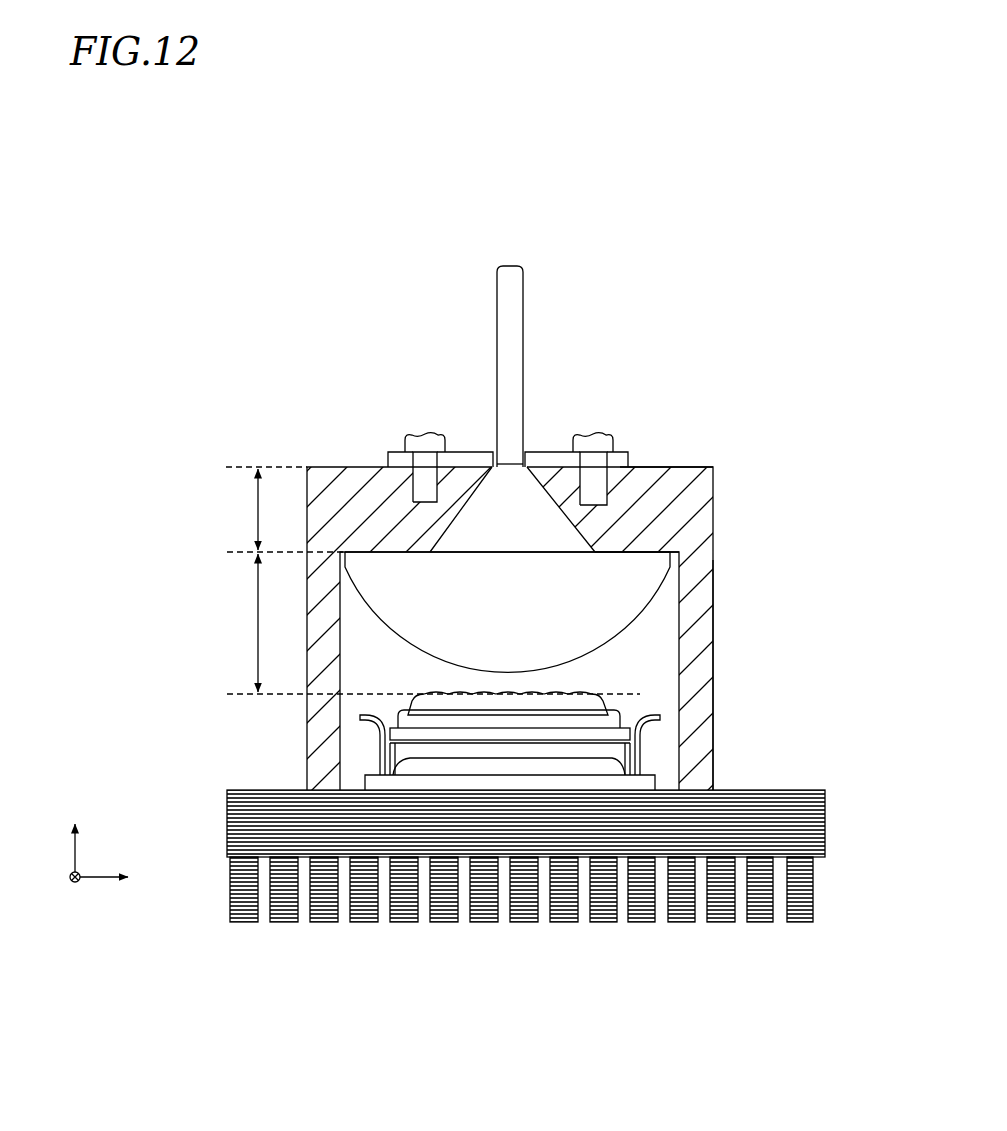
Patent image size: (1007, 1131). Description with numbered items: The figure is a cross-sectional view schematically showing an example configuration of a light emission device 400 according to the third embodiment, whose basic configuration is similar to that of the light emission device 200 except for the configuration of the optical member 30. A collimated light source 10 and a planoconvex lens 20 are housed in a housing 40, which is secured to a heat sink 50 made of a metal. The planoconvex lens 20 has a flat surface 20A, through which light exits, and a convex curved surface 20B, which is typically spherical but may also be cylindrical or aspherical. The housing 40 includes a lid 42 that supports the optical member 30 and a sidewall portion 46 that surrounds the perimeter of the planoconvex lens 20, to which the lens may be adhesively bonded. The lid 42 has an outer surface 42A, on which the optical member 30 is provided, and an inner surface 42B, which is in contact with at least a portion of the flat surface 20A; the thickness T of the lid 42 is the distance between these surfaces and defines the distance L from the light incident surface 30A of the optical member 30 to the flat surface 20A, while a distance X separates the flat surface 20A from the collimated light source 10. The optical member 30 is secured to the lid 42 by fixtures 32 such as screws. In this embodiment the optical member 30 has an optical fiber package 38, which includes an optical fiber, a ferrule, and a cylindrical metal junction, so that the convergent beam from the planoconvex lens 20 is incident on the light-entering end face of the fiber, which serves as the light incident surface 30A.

The light emission device 400 is at (735, 232).
The light emission device 200 is at (235, 372).
The housing 40 is at (733, 545).
The lid 42 is at (378, 518).
The outer surface 42A is at (685, 466).
The inner surface 42B is at (618, 557).
The sidewall portion 46 is at (700, 630).
The optical member 30 is at (553, 325).
The optical fiber package 38 is at (503, 264).
The light incident surface 30A is at (507, 471).
The fixtures 32 is at (610, 436).
The planoconvex lens 20 is at (532, 614).
The flat surface 20A is at (446, 549).
The convex curved surface 20B is at (373, 613).
The collimated light source 10 is at (605, 699).
The heat sink 50 is at (750, 790).